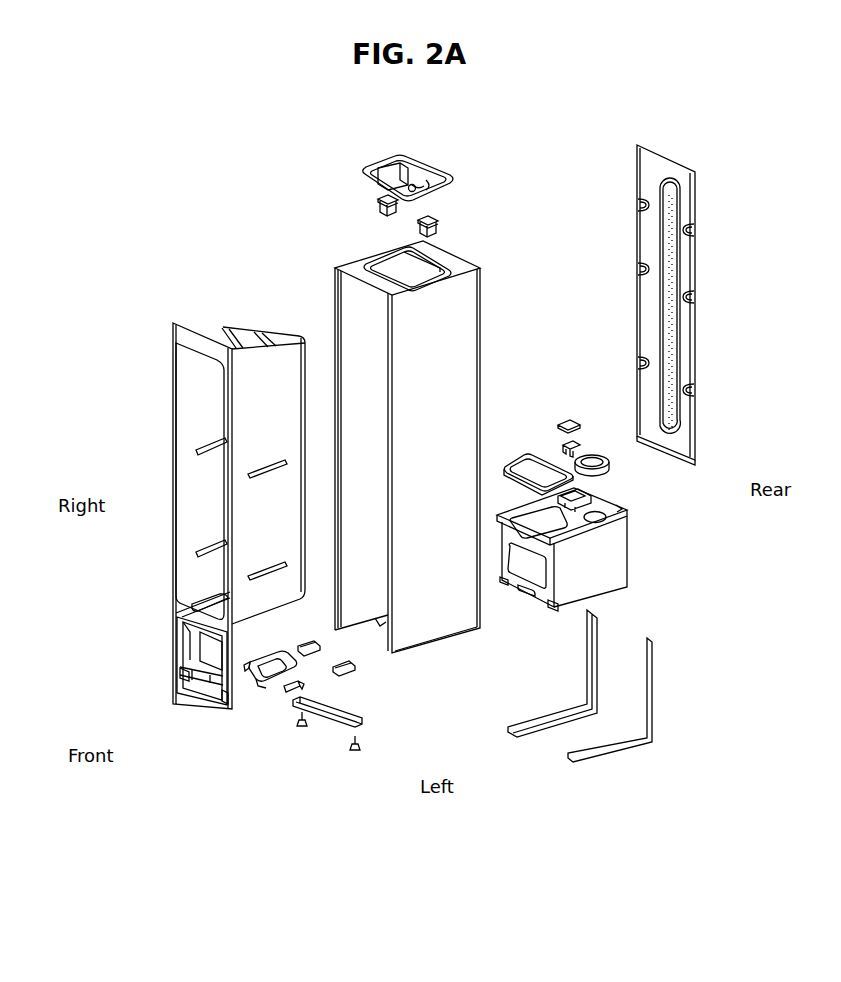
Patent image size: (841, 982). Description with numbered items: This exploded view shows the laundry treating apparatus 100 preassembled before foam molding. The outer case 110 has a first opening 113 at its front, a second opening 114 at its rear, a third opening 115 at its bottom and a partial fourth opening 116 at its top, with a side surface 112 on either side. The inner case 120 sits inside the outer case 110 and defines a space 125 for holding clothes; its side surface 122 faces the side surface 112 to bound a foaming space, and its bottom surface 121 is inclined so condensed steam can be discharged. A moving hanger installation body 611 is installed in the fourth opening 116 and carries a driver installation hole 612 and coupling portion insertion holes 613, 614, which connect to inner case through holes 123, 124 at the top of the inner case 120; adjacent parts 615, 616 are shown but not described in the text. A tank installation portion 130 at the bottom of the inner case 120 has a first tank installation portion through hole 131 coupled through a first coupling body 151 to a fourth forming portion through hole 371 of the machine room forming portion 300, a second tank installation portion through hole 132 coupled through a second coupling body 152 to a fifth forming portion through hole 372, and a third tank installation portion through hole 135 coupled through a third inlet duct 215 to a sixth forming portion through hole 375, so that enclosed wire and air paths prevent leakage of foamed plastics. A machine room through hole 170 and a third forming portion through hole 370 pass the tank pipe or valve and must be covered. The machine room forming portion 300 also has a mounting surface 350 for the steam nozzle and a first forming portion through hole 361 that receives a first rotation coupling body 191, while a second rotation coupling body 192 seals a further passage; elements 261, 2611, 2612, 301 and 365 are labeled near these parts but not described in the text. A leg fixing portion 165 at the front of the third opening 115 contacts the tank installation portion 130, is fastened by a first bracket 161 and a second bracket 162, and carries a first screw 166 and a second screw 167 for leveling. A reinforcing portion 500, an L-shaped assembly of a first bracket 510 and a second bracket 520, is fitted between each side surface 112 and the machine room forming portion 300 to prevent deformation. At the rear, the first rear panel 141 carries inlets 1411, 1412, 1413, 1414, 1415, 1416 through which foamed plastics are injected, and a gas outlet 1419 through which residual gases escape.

The laundry treating apparatus 100 is at (187, 107).
The outer case 110 is at (443, 336).
The side surface of the outer case 112 is at (432, 625).
The first opening 113 is at (349, 320).
The second opening 114 is at (481, 300).
The third opening 115 is at (380, 623).
The fourth opening 116 is at (416, 271).
The inner case 120 is at (178, 332).
The bottom surface of the inner case 121 is at (192, 603).
The side surface of the inner case 122 is at (280, 420).
The inner case through hole 123 is at (226, 330).
The inner case through hole 124 is at (264, 345).
The space for holding clothes 125 is at (190, 382).
The tank installation portion 130 is at (178, 625).
The first tank installation portion through hole 131 is at (177, 688).
The second tank installation portion through hole 132 is at (229, 707).
The third tank installation portion through hole 135 is at (208, 690).
The first rear panel 141 is at (717, 170).
The inlet 1411 is at (697, 235).
The inlet 1412 is at (640, 205).
The inlet 1413 is at (697, 298).
The inlet 1414 is at (640, 268).
The inlet 1415 is at (697, 390).
The inlet 1416 is at (640, 362).
The gas outlet 1419 is at (669, 182).
The first coupling body 151 is at (258, 662).
The second coupling body 152 is at (300, 688).
The first bracket 161 is at (307, 641).
The second bracket 162 is at (345, 664).
The leg fixing portion 165 is at (350, 716).
The first screw 166 is at (300, 730).
The second screw 167 is at (352, 752).
The machine room through hole 170 is at (212, 645).
The first rotation coupling body 191 is at (598, 456).
The second rotation coupling body 192 is at (526, 464).
The third inlet duct 215 is at (265, 683).
The sensor module 261 is at (590, 372).
The sensor plate 2611 is at (562, 418).
The sensor holder 2612 is at (577, 445).
The machine room forming portion 300 is at (610, 585).
The top plate 301 is at (622, 512).
The mounting surface 350 is at (586, 498).
The first forming portion through hole 361 is at (606, 516).
The top cover 365 is at (514, 517).
The third forming portion through hole 370 is at (535, 560).
The fourth forming portion through hole 371 is at (503, 586).
The fifth forming portion through hole 372 is at (554, 610).
The sixth forming portion through hole 375 is at (528, 596).
The reinforcing portion 500 is at (722, 622).
The first bracket 510 is at (600, 640).
The second bracket 520 is at (653, 675).
The moving hanger installation body 611 is at (418, 160).
The driver installation hole 612 is at (440, 178).
The coupling portion insertion hole 613 is at (392, 170).
The coupling portion insertion hole 614 is at (430, 182).
The block 615 is at (378, 205).
The block 616 is at (440, 226).